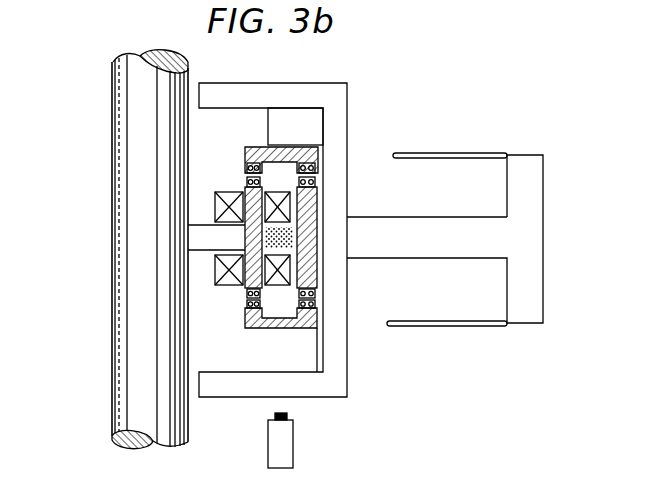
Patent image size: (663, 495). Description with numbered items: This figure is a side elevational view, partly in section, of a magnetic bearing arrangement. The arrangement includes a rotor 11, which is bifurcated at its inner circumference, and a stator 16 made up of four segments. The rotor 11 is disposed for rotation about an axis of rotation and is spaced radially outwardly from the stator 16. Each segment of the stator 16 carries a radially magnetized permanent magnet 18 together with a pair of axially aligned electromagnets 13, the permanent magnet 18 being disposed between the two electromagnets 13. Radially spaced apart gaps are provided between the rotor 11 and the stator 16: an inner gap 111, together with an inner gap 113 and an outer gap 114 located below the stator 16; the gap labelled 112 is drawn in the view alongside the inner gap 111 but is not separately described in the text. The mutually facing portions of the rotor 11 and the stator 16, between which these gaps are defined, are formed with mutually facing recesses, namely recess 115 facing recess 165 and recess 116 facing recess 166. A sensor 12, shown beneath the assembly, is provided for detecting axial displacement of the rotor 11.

The rotor 11 is at (515, 313).
The sensor 12 is at (290, 438).
The electromagnets 13 is at (220, 266).
The stator 16 is at (320, 264).
The permanent magnet 18 is at (315, 231).
The inner gap 111 is at (253, 146).
The upper bearing 112 is at (305, 146).
The inner gap 113 is at (244, 308).
The outer gap 114 is at (310, 301).
The recess 115 is at (255, 329).
The recess 116 is at (300, 329).
The recess 165 is at (244, 296).
The recess 166 is at (318, 289).